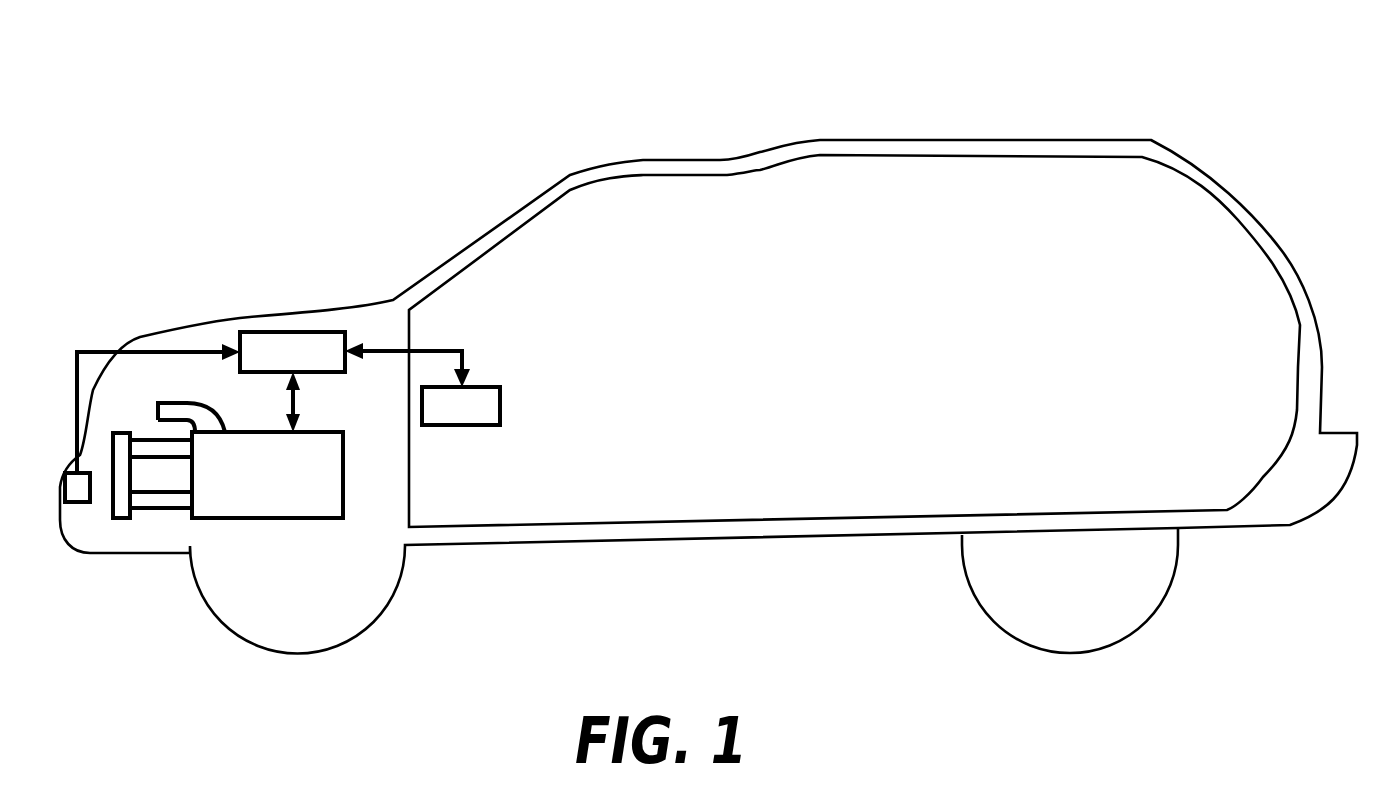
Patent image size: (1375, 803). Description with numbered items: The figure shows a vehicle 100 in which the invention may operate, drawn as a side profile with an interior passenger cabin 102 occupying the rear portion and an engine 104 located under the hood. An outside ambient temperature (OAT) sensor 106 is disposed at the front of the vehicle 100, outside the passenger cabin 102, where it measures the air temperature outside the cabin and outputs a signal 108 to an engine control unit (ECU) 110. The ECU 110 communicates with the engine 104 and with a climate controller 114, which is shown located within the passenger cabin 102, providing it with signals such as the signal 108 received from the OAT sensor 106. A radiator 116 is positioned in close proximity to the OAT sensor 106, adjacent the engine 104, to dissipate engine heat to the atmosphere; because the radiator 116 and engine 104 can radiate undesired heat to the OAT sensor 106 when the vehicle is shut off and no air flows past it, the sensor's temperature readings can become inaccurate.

The vehicle 100 is at (202, 144).
The interior passenger cabin 102 is at (708, 396).
The engine 104 is at (250, 460).
The outside ambient temperature (OAT) sensor 106 is at (73, 490).
The signal 108 is at (84, 350).
The engine control unit (ECU) 110 is at (292, 342).
The climate controller 114 is at (468, 415).
The radiator 116 is at (122, 510).